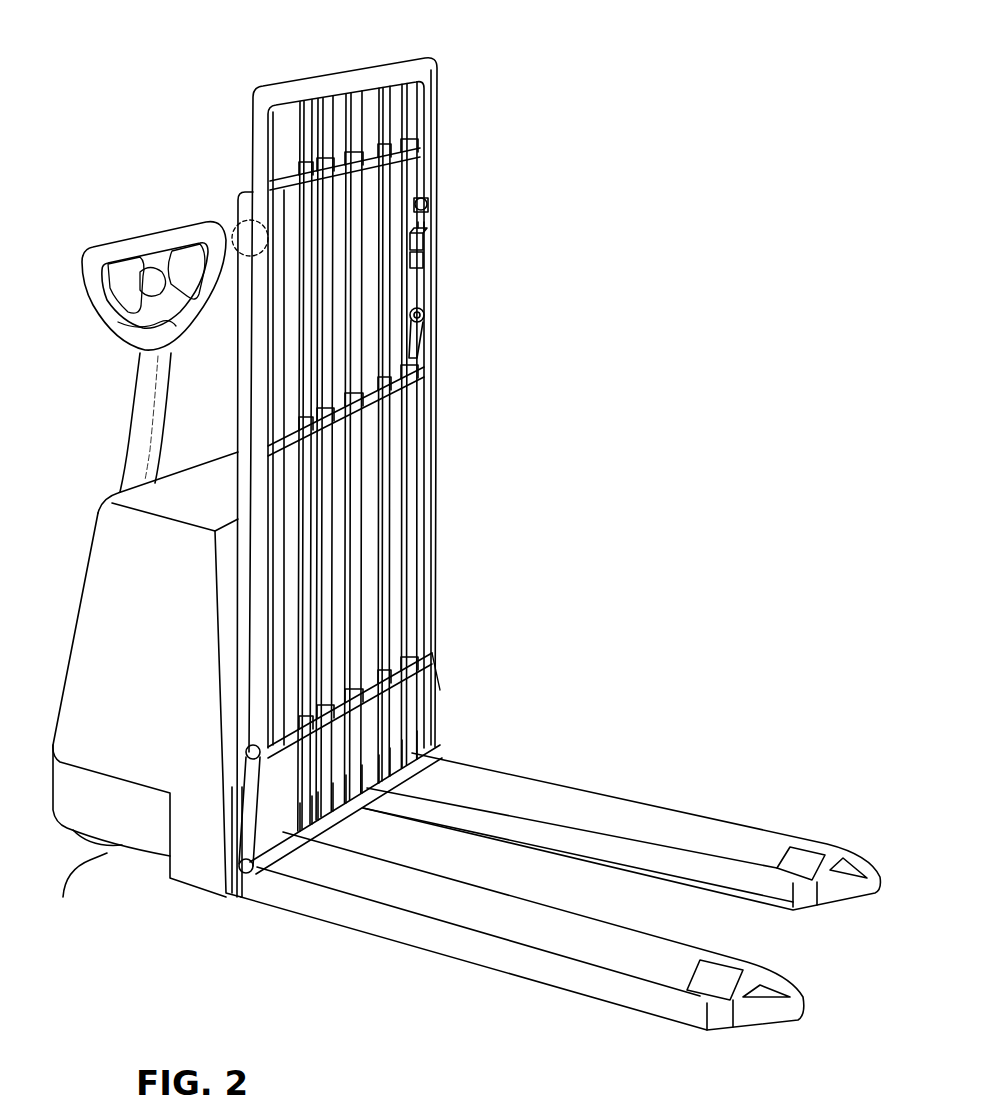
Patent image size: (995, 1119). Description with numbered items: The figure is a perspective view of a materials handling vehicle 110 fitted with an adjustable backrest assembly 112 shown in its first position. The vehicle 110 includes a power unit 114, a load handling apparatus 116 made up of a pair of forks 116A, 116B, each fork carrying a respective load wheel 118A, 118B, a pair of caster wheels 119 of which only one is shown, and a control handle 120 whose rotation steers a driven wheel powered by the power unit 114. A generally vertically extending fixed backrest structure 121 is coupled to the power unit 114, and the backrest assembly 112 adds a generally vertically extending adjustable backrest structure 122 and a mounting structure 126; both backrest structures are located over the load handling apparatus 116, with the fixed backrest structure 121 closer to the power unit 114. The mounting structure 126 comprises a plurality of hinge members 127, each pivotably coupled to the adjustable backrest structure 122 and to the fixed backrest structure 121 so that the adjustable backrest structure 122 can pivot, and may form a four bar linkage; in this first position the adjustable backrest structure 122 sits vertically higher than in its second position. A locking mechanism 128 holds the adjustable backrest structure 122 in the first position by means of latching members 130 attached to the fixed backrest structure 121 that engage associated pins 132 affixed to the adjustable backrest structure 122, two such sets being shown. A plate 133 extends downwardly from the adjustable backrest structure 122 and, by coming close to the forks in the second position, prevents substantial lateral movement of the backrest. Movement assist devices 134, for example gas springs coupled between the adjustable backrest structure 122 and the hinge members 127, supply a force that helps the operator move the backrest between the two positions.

The materials handling vehicle 110 is at (570, 135).
The adjustable backrest assembly 112 is at (437, 60).
The power unit 114 is at (72, 640).
The load handling apparatus 116 is at (487, 963).
The fork 116A is at (643, 815).
The fork 116B is at (605, 935).
The load wheel 118A is at (800, 860).
The load wheel 118B is at (725, 976).
The caster wheel 119 is at (107, 855).
The control handle 120 is at (128, 257).
The fixed backrest structure 121 is at (238, 215).
The adjustable backrest structure 122 is at (430, 240).
The mounting structure 126 is at (272, 405).
The hinge member 127 is at (262, 874).
The locking mechanism 128 is at (247, 232).
The latching member 130 is at (270, 232).
The pin 132 is at (245, 240).
The plate 133 is at (367, 788).
The movement assist device 134 is at (430, 258).